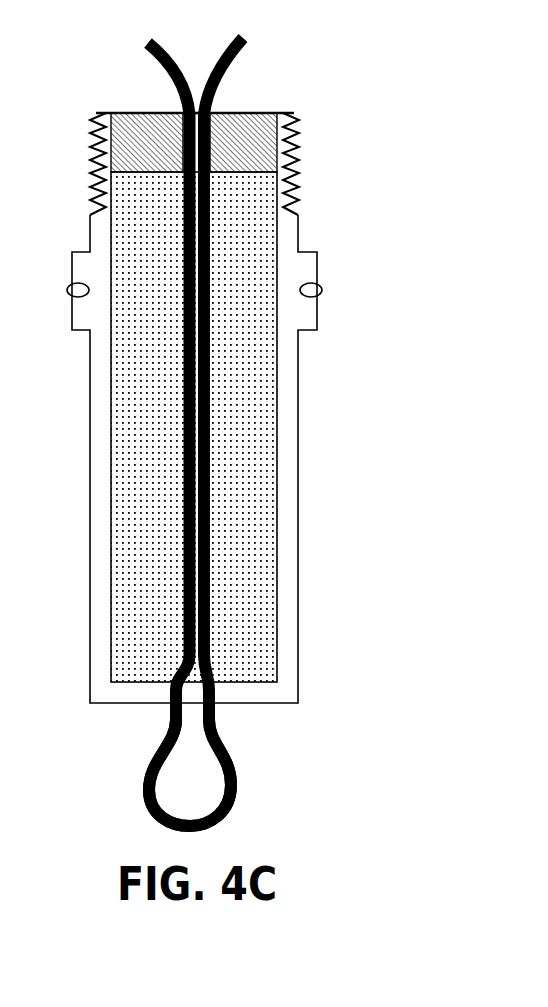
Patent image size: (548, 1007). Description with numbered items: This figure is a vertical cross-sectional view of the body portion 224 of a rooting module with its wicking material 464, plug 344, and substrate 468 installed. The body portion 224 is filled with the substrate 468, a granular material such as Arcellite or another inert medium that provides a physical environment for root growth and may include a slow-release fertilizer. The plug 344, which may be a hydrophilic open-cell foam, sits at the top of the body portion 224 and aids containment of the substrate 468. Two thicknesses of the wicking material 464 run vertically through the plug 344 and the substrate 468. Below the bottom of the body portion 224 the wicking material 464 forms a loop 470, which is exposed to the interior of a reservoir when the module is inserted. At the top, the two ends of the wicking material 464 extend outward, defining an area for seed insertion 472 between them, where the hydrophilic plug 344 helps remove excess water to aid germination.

The body portion 224 is at (298, 462).
The plug 344 is at (142, 111).
The wicking material 464 is at (233, 760).
The substrate 468 is at (165, 396).
The loop 470 is at (124, 754).
The area for seed insertion 472 is at (197, 59).